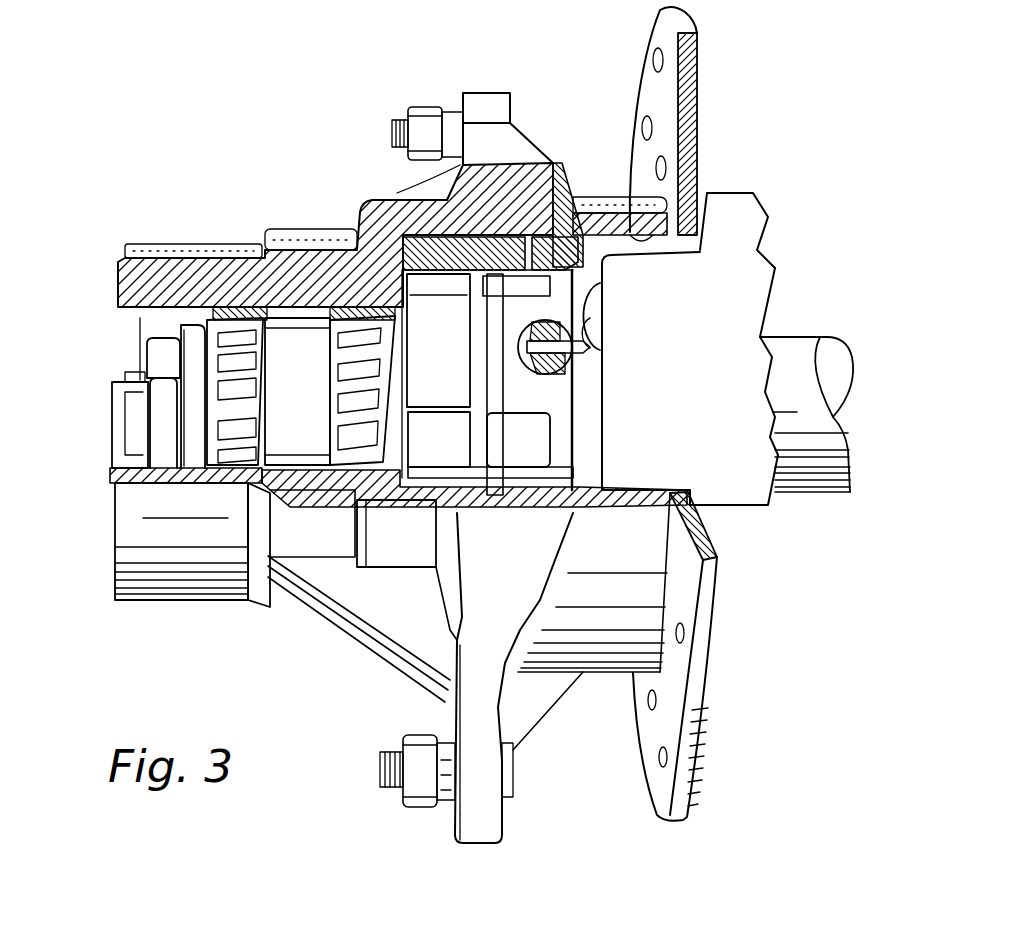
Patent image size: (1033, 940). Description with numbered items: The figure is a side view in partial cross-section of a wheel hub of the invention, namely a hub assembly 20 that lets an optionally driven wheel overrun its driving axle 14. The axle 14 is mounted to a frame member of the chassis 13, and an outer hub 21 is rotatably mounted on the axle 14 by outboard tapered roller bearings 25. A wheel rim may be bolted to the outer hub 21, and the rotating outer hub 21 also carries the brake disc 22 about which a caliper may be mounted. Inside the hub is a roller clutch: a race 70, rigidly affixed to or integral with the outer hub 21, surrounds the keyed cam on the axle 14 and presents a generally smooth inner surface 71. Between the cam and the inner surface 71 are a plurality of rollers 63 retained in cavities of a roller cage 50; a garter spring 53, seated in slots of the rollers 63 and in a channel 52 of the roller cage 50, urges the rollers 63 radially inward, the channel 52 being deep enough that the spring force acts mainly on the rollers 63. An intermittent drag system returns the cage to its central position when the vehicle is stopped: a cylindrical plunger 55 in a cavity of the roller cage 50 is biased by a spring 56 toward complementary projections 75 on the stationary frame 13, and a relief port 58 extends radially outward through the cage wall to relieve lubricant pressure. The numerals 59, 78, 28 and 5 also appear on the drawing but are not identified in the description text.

The hub assembly 20 is at (222, 157).
The outer hub 21 is at (395, 193).
The seal 59 is at (560, 178).
The race 70 is at (560, 170).
The protrusion 78 is at (697, 253).
The chassis frame 13 is at (730, 374).
The projections 75 is at (600, 295).
The relief port 58 is at (597, 340).
The plunger 55 is at (585, 353).
The spring 56 is at (583, 393).
The seal cap 28 is at (165, 357).
The driving axle 14 is at (112, 415).
The tapered roller bearings 25 is at (330, 412).
The roller cage 50 is at (456, 341).
The garter spring 53 is at (468, 352).
The rollers 63 is at (456, 454).
The channel 52 is at (490, 428).
The inner surface 71 is at (437, 515).
The brake disc 22 is at (697, 790).
The section line 5 is at (428, 848).